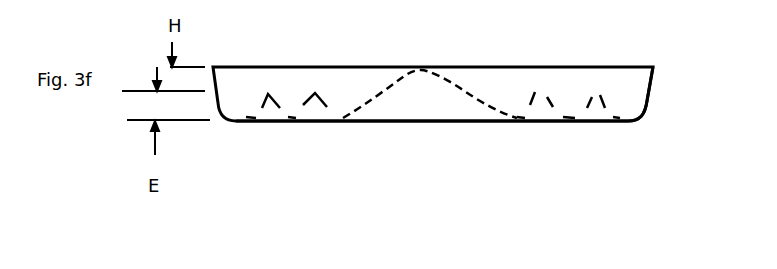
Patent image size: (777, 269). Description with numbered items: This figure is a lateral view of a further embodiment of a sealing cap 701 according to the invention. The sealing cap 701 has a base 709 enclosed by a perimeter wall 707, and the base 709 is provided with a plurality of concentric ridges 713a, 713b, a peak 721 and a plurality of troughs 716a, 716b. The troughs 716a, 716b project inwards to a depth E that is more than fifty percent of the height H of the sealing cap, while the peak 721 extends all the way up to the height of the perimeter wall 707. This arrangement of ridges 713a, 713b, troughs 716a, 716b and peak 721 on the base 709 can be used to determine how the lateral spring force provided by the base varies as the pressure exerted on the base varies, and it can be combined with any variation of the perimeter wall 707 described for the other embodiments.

The sealing cap 701 is at (670, 67).
The perimeter wall 707 is at (647, 96).
The base 709 is at (467, 123).
The concentric ridge 713a is at (240, 123).
The concentric ridge 713b is at (297, 136).
The trough 716a is at (598, 111).
The trough 716b is at (537, 93).
The peak 721 is at (402, 83).